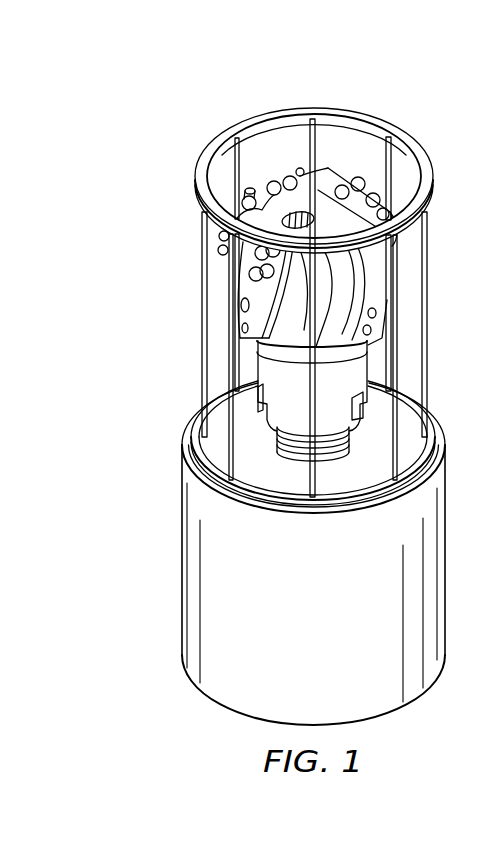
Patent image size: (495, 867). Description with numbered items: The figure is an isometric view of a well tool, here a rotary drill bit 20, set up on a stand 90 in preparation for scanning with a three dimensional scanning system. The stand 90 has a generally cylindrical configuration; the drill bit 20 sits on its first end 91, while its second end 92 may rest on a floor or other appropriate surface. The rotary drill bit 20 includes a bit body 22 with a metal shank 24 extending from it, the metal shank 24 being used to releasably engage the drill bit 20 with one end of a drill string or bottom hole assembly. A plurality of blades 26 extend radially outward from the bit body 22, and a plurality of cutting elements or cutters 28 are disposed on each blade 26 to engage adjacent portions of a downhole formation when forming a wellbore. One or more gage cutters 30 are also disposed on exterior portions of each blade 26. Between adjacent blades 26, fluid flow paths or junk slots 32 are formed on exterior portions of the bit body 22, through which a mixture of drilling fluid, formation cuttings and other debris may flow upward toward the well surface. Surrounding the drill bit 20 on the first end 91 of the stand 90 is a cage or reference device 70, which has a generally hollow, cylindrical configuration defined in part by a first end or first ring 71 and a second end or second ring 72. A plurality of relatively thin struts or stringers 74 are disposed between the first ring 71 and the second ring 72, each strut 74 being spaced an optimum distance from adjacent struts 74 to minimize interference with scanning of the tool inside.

The rotary drill bit 20 is at (374, 357).
The bit body 22 is at (343, 283).
The metal shank 24 is at (258, 425).
The blades 26 is at (247, 290).
The cutting elements 28 is at (275, 181).
The gage cutters 30 is at (244, 334).
The junk slots 32 is at (291, 297).
The cage 70 is at (209, 133).
The first ring 71 is at (381, 117).
The second ring 72 is at (214, 462).
The struts 74 is at (200, 211).
The stand 90 is at (182, 570).
The first end 91 is at (445, 434).
The second end 92 is at (414, 703).